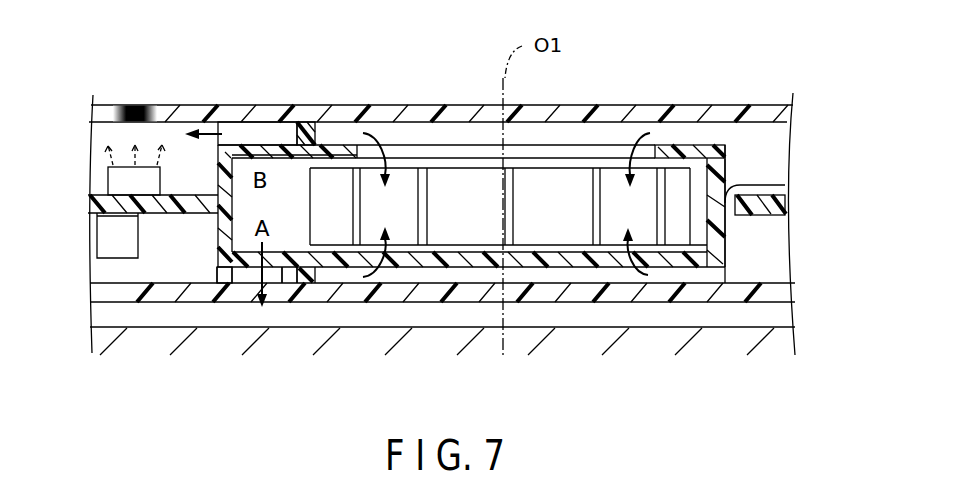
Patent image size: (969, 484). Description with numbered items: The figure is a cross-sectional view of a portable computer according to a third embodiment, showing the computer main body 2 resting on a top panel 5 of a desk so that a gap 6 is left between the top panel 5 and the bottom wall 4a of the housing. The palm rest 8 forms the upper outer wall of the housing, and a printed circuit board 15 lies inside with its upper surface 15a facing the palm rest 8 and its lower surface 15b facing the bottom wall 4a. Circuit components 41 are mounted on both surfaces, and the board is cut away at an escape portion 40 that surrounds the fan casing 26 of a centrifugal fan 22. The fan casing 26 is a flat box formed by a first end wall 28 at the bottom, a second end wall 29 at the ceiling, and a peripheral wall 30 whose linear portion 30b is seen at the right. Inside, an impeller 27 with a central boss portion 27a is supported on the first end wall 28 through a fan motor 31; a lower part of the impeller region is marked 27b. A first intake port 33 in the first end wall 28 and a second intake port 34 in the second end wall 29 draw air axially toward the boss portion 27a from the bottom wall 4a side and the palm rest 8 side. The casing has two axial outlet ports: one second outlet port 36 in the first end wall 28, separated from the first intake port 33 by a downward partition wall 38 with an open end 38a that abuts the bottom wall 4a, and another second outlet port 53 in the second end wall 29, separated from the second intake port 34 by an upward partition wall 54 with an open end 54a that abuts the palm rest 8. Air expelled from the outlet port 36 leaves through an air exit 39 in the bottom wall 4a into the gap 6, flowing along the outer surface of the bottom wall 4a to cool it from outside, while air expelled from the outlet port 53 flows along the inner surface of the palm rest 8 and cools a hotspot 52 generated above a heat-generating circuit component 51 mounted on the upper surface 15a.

The computer main body 2 is at (773, 92).
The top panel 5 is at (103, 345).
The gap 6 is at (441, 320).
The palm rest 8 is at (617, 113).
The printed circuit board 15 is at (783, 203).
The upper surface 15a is at (100, 195).
The lower surface 15b is at (107, 217).
The centrifugal fan 22 is at (689, 132).
The fan casing 26 is at (722, 170).
The impeller 27 is at (552, 178).
The boss portion 27a is at (473, 177).
The lower corner portion 27b is at (724, 248).
The first end wall 28 is at (523, 258).
The second end wall 29 is at (336, 145).
The peripheral wall 30 is at (728, 247).
The linear portion 30b is at (722, 220).
The fan motor 31 is at (588, 248).
The first intake port 33 is at (393, 258).
The second intake port 34 is at (418, 152).
The second outlet port 36 is at (252, 260).
The partition wall 38 is at (305, 275).
The open end 38a is at (226, 275).
The air exit 39 is at (280, 277).
The escape portion 40 is at (745, 187).
The circuit components 41 is at (103, 249).
The bottom wall 4a is at (647, 298).
The circuit component 51 is at (110, 178).
The hotspot 52 is at (140, 105).
The second outlet port 53 is at (268, 152).
The partition wall 54 is at (304, 130).
The open end 54a is at (222, 131).